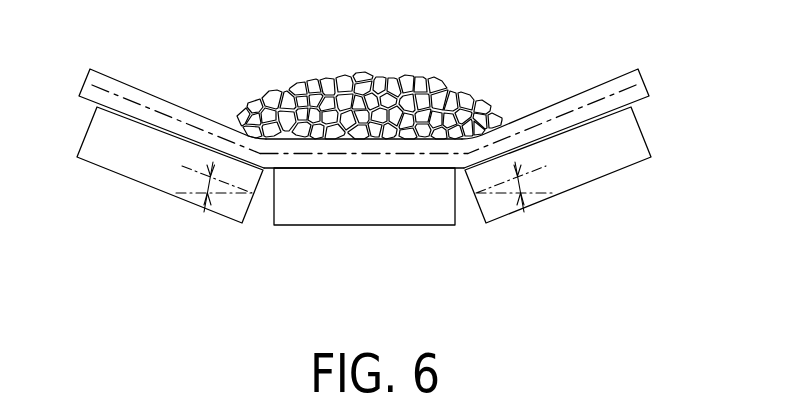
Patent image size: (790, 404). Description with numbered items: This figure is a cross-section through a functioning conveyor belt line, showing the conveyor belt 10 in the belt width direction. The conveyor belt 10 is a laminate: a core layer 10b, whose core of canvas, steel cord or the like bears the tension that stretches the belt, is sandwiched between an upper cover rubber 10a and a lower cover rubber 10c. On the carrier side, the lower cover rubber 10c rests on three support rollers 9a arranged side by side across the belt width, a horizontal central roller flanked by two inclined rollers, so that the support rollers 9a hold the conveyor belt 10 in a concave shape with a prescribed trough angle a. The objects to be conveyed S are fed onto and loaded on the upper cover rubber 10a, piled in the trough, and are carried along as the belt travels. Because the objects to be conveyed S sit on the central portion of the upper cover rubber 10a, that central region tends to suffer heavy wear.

The conveyor belt 10 is at (364, 141).
The upper cover rubber 10a is at (550, 112).
The core layer 10b is at (138, 102).
The lower cover rubber 10c is at (342, 162).
The support rollers 9a is at (107, 162).
The objects to be conveyed S is at (291, 77).
The trough angle a is at (364, 187).